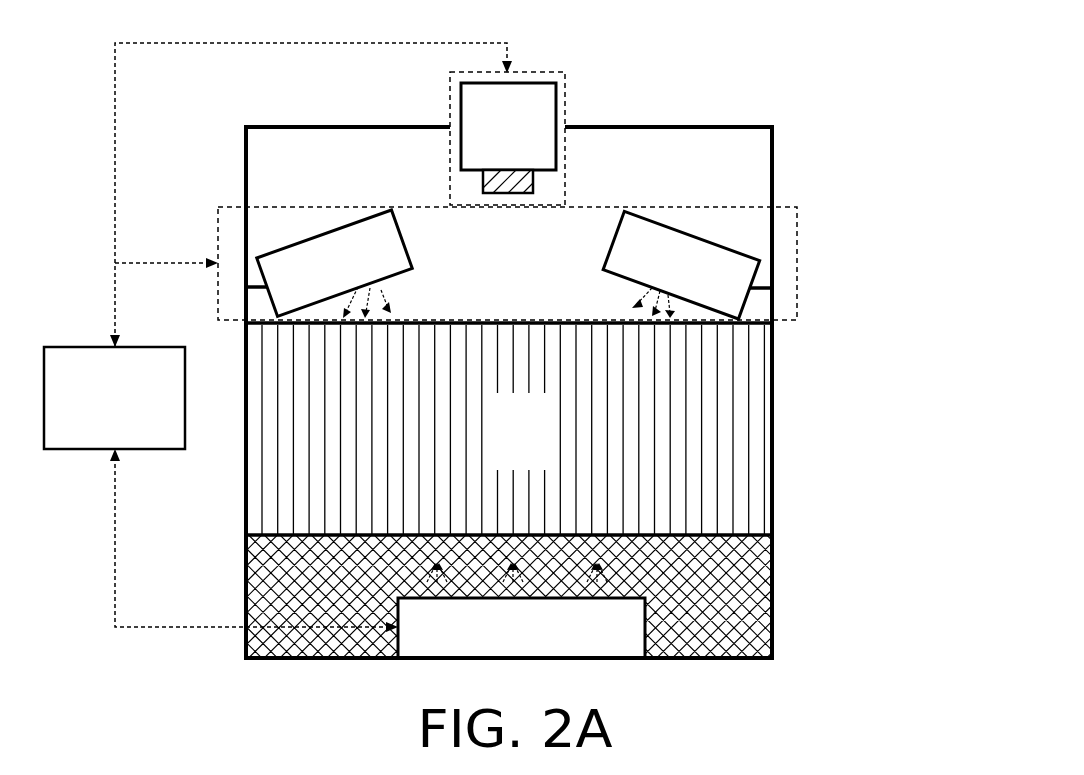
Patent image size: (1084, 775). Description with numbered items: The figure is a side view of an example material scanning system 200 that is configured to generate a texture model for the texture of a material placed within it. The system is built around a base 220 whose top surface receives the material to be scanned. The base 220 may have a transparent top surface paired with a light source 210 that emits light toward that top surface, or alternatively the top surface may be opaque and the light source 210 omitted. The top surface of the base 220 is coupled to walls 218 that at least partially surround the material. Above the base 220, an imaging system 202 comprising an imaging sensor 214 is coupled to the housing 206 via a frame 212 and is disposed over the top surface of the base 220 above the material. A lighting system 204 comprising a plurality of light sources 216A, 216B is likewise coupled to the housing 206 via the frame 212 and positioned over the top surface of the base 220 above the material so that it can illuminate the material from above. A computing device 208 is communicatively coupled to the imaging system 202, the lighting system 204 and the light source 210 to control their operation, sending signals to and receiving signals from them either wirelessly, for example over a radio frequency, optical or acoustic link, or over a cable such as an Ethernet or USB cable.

The material scanning system 200 is at (502, 344).
The imaging system 202 is at (615, 118).
The lighting system 204 is at (589, 263).
The housing 206 is at (521, 378).
The computing device 208 is at (278, 337).
The light source 210 is at (521, 628).
The frame 212 is at (772, 155).
The imaging sensor 214 is at (508, 138).
The light source 216A is at (335, 264).
The light source 216B is at (681, 265).
The walls 218 is at (509, 429).
The base 220 is at (506, 596).